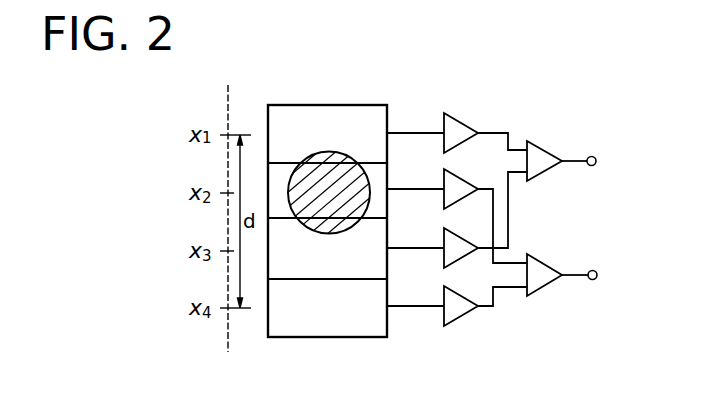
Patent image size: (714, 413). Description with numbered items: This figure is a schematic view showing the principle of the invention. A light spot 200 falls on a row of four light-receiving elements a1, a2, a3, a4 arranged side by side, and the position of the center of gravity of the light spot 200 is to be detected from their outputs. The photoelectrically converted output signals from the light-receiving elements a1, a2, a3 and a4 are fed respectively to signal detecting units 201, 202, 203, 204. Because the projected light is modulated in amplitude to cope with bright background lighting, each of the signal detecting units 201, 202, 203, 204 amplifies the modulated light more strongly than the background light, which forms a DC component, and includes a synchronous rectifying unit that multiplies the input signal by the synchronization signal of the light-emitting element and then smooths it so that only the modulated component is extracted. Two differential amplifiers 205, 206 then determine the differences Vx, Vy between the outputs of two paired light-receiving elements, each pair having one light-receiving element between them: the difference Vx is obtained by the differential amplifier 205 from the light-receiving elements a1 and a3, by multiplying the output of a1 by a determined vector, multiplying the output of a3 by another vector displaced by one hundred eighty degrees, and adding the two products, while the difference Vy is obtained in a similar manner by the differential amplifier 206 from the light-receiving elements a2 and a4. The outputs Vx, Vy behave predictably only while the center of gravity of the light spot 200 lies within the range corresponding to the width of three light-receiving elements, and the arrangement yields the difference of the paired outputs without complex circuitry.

The light spot 200 is at (328, 152).
The signal detecting unit 201 is at (466, 126).
The signal detecting unit 202 is at (468, 195).
The signal detecting unit 203 is at (468, 242).
The signal detecting unit 204 is at (462, 319).
The differential amplifier 205 is at (545, 150).
The differential amplifier 206 is at (547, 289).
The light-receiving element a1 is at (388, 117).
The light-receiving element a2 is at (388, 179).
The light-receiving element a3 is at (388, 238).
The light-receiving element a4 is at (388, 297).
The difference output Vx is at (610, 161).
The difference output Vy is at (611, 274).